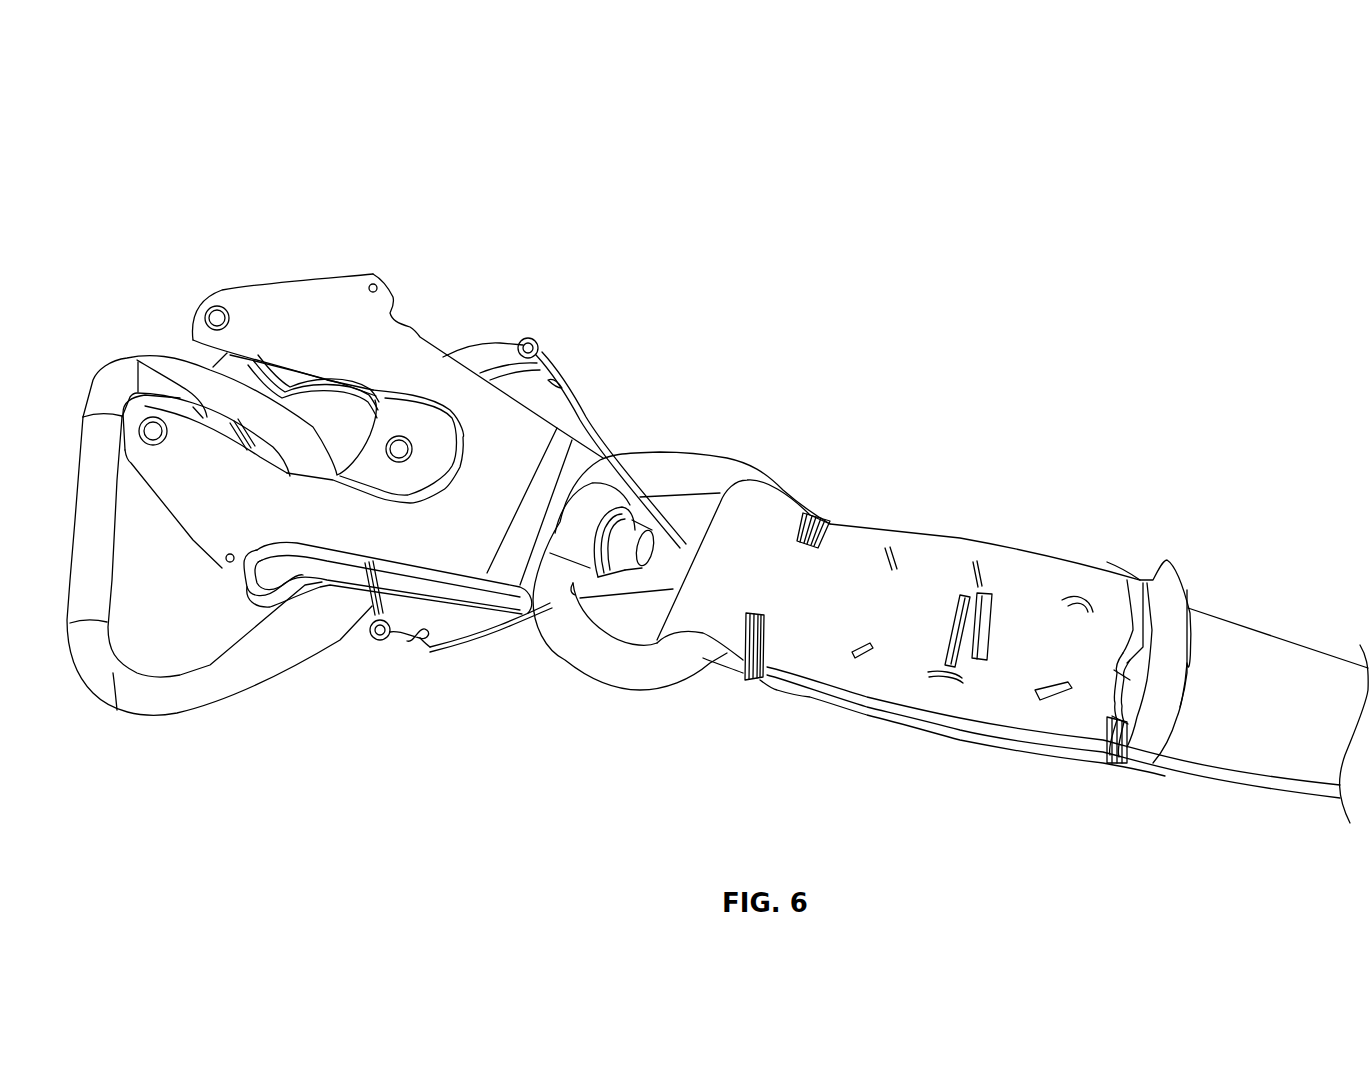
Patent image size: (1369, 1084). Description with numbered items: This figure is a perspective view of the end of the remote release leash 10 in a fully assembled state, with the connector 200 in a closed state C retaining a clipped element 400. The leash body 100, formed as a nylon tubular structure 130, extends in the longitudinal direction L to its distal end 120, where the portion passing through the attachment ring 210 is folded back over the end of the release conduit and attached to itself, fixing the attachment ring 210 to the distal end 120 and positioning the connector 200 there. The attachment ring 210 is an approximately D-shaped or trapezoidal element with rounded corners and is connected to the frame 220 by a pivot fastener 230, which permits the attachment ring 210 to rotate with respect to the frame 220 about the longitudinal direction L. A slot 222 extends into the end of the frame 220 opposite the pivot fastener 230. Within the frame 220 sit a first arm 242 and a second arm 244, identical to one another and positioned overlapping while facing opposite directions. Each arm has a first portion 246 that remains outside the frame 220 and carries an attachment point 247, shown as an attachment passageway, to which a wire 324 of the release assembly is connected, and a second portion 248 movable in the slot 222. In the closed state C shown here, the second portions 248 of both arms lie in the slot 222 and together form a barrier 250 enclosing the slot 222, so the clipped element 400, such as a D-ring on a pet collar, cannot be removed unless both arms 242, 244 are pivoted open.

The remote release leash 10 is at (1197, 273).
The leash body 100 is at (1292, 603).
The distal end 120 is at (763, 517).
The tubular structure 130 is at (1255, 753).
The connector 200 is at (315, 152).
The attachment ring 210 is at (700, 477).
The frame 220 is at (373, 273).
The slot 222 is at (325, 386).
The pivot fastener 230 is at (621, 503).
The first arm 242 is at (470, 350).
The second arm 244 is at (357, 598).
The first portion 246 is at (389, 576).
The attachment point 247 is at (530, 340).
The second portion 248 is at (240, 368).
The barrier 250 is at (207, 420).
The wire 324 is at (585, 413).
The clipped element 400 is at (120, 362).
The closed state C is at (158, 207).
The longitudinal direction L is at (1065, 830).